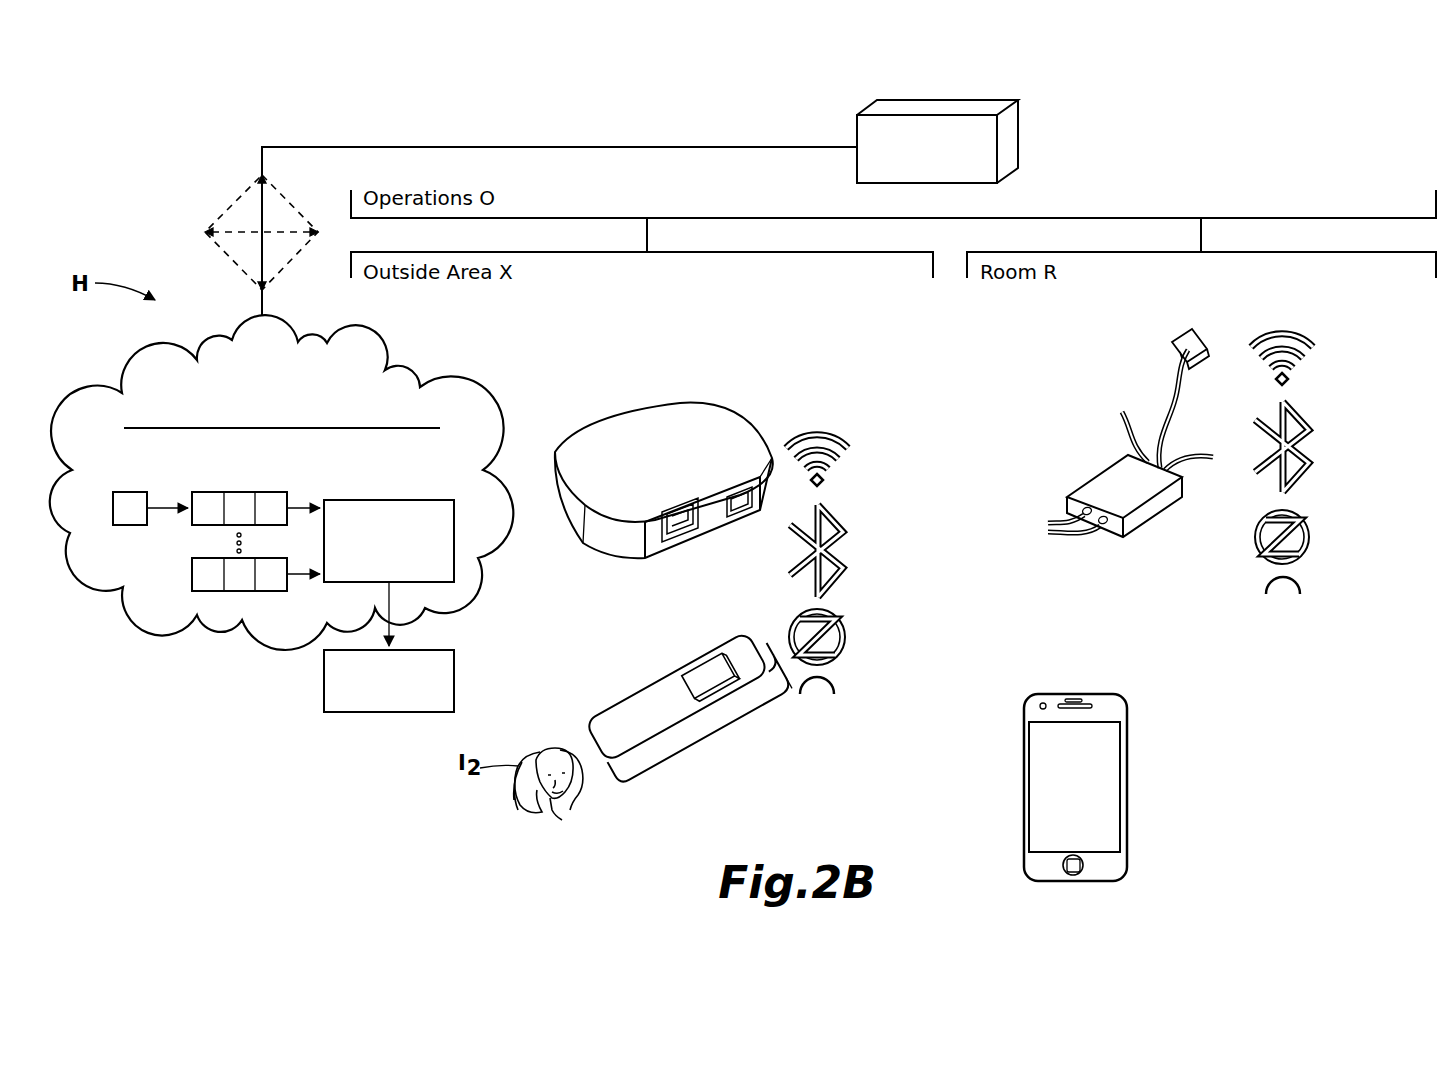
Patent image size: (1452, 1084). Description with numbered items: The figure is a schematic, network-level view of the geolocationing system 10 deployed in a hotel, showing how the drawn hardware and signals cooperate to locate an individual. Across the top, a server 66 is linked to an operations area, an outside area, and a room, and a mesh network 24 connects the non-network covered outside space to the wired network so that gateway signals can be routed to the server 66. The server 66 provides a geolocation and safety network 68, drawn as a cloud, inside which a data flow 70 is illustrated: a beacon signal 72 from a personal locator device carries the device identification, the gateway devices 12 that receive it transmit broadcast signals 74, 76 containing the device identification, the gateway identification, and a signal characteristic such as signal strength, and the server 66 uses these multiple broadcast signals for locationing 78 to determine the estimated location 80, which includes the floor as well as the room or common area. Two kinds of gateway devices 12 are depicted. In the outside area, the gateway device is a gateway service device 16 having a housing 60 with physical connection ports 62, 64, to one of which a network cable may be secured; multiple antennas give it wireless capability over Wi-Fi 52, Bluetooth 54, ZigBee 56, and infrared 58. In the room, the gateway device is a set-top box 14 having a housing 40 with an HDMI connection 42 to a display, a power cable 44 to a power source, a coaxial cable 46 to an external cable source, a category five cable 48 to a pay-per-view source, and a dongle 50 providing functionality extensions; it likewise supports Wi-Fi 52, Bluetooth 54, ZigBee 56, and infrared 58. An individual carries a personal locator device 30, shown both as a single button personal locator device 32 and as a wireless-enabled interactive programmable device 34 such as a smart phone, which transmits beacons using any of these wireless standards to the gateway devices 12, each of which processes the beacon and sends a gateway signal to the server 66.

The geolocationing system 10 is at (1248, 190).
The gateway device 12 is at (738, 420).
The set-top box 14 is at (1088, 473).
The gateway service device 16 is at (682, 403).
The mesh network 24 is at (225, 205).
The personal locator device 30 is at (1072, 787).
The single button personal locator device 32 is at (672, 757).
The wireless-enabled interactive programmable device 34 is at (1133, 821).
The housing 40 is at (1125, 444).
The HDMI connection 42 is at (1078, 538).
The power cable 44 is at (1060, 528).
The coaxial cable 46 is at (1130, 420).
The category five cable 48 is at (1190, 453).
The dongle 50 is at (1190, 336).
The Wi-Fi 52 is at (843, 465).
The Bluetooth 54 is at (845, 548).
The ZigBee 56 is at (846, 640).
The infrared 58 is at (833, 708).
The housing 60 is at (664, 462).
The physical connection port 62 is at (682, 506).
The physical connection port 64 is at (740, 520).
The server 66 is at (1010, 140).
The geolocation and safety network 68 is at (375, 342).
The data flow 70 is at (280, 474).
The beacon signal 72 is at (130, 492).
The broadcast signal 74 is at (236, 492).
The broadcast signal 76 is at (192, 574).
The locationing 78 is at (395, 500).
The estimated location 80 is at (454, 683).